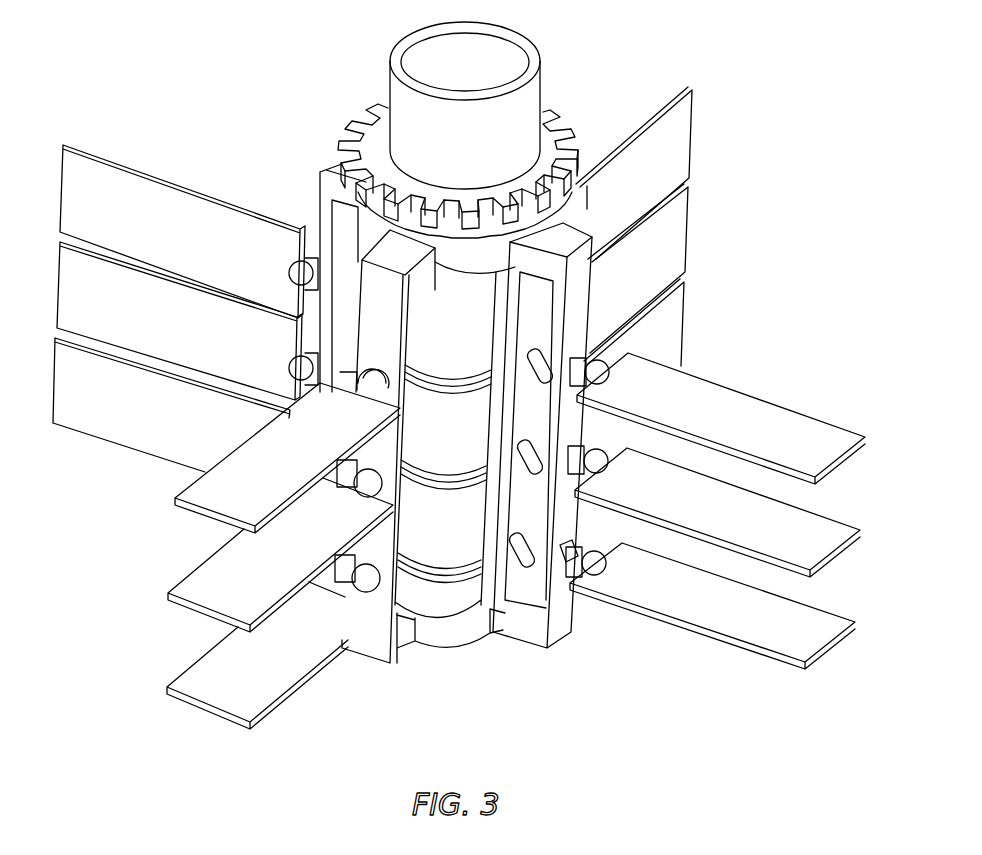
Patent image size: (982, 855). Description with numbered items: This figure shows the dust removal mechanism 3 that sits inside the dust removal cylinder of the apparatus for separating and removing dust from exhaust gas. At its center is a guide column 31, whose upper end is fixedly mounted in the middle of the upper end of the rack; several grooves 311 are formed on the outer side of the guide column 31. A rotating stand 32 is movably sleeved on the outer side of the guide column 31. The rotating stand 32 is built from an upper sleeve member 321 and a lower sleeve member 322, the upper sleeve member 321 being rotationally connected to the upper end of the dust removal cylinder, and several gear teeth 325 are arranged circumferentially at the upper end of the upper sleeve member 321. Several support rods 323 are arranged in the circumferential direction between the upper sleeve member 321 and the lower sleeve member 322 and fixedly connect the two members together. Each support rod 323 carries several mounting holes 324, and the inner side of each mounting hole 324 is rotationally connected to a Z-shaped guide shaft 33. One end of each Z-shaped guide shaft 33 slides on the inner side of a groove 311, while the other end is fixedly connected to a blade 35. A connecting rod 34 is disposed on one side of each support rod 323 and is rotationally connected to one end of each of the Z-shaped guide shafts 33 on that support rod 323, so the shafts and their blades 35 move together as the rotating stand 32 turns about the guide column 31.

The dust removal mechanism 3 is at (138, 505).
The guide column 31 is at (490, 138).
The groove 311 is at (467, 370).
The rotating stand 32 is at (413, 665).
The upper sleeve member 321 is at (468, 250).
The lower sleeve member 322 is at (457, 628).
The support rod 323 is at (575, 308).
The mounting hole 324 is at (561, 556).
The gear teeth 325 is at (360, 185).
The Z-shaped guide shaft 33 is at (592, 357).
The connecting rod 34 is at (507, 483).
The blade 35 is at (785, 432).